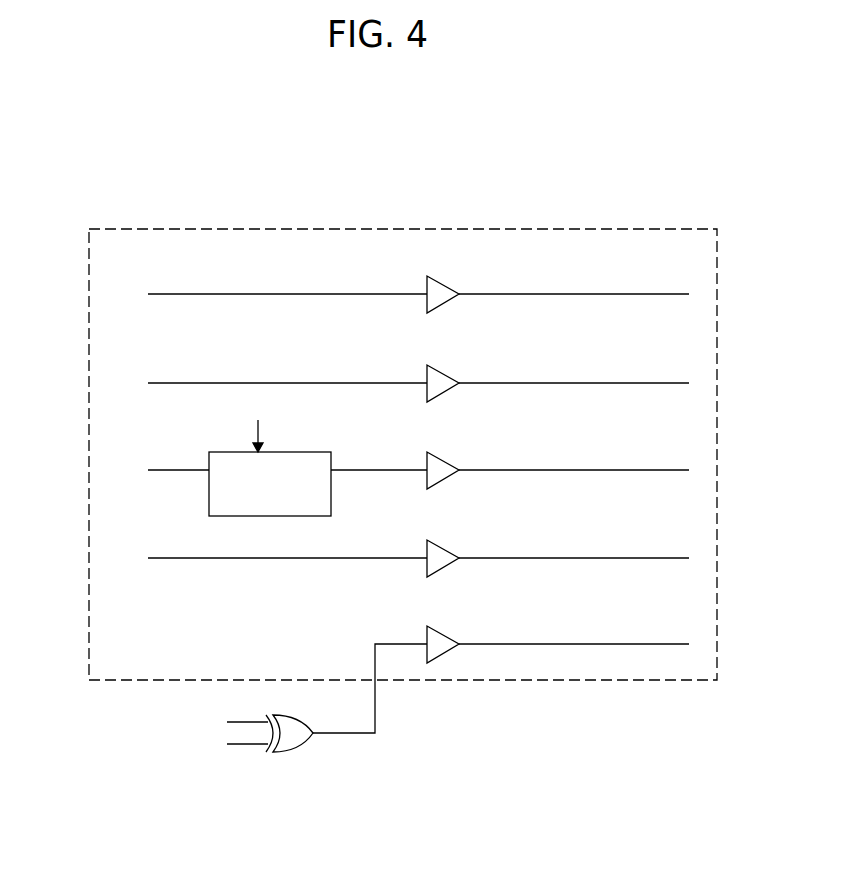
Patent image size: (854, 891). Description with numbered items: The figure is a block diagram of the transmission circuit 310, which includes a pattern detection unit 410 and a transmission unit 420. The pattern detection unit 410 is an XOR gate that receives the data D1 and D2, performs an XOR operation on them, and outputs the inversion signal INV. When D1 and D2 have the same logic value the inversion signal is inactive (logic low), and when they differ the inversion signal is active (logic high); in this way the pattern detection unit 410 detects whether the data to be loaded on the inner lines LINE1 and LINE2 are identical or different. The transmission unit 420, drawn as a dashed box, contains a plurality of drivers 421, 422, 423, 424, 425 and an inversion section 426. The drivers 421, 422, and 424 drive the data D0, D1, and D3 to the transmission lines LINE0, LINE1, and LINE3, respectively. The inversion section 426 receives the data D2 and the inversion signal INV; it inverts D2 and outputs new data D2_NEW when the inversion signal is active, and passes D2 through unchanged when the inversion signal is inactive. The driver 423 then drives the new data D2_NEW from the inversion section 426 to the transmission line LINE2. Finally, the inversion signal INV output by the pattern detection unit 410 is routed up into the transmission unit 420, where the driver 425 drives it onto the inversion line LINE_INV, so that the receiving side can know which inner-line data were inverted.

The transmission circuit 310 is at (616, 184).
The transmission unit 420 is at (668, 229).
The driver 421 is at (438, 284).
The driver 422 is at (438, 373).
The driver 423 is at (438, 460).
The driver 424 is at (438, 548).
The driver 425 is at (438, 634).
The inversion section 426 is at (278, 452).
The pattern detection unit 410 is at (297, 753).